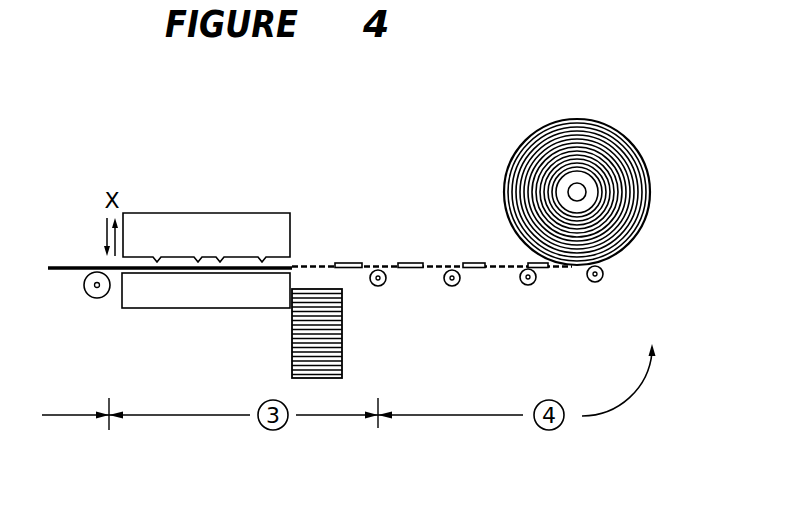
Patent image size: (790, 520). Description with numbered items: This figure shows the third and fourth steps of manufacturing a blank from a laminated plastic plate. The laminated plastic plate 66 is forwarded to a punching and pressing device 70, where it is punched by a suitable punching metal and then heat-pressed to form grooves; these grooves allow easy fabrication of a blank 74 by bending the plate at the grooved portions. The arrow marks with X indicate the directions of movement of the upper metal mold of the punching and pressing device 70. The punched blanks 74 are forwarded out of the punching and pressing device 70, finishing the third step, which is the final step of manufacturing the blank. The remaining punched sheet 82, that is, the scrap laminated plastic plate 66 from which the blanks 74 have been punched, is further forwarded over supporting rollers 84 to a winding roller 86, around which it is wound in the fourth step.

The laminated plastic plate 66 is at (63, 265).
The punching and pressing device 70 is at (203, 228).
The blank 74 is at (343, 320).
The punched sheet 82 is at (412, 262).
The supporting rollers 84 is at (452, 287).
The winding roller 86 is at (540, 160).